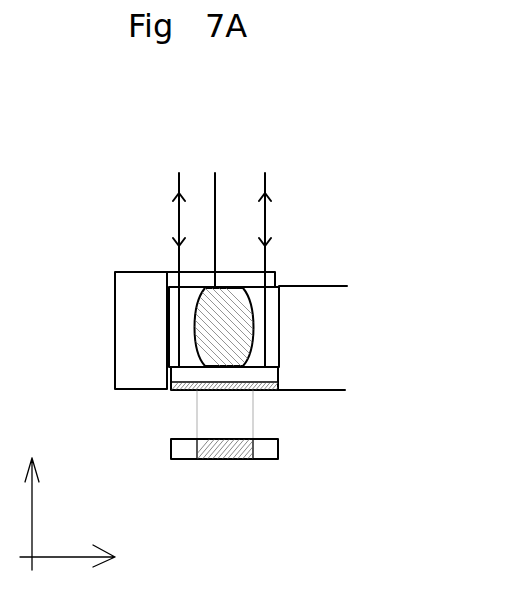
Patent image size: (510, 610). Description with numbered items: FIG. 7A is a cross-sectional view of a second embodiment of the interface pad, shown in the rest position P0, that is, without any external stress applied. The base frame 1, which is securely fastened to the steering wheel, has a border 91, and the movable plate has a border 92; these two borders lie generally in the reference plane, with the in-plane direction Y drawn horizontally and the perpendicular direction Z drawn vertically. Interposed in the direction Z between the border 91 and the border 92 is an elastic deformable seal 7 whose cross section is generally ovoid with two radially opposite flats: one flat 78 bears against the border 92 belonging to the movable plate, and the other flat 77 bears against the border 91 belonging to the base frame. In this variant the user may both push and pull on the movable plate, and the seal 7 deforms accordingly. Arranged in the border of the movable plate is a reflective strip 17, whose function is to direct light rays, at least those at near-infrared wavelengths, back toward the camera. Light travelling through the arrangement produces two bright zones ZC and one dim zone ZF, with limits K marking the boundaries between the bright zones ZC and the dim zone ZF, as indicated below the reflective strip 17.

The base frame 1 is at (150, 343).
The elastic deformable seal 7 is at (254, 307).
The reflective strip 17 is at (263, 391).
The flat 77 is at (238, 287).
The flat 78 is at (225, 367).
The border 91 is at (253, 278).
The border 92 is at (175, 390).
The rest position P0 is at (317, 315).
The bright zone ZC is at (183, 452).
The limit K is at (197, 460).
The dim zone ZF is at (225, 460).
The direction Z is at (22, 514).
The direction Y is at (67, 543).